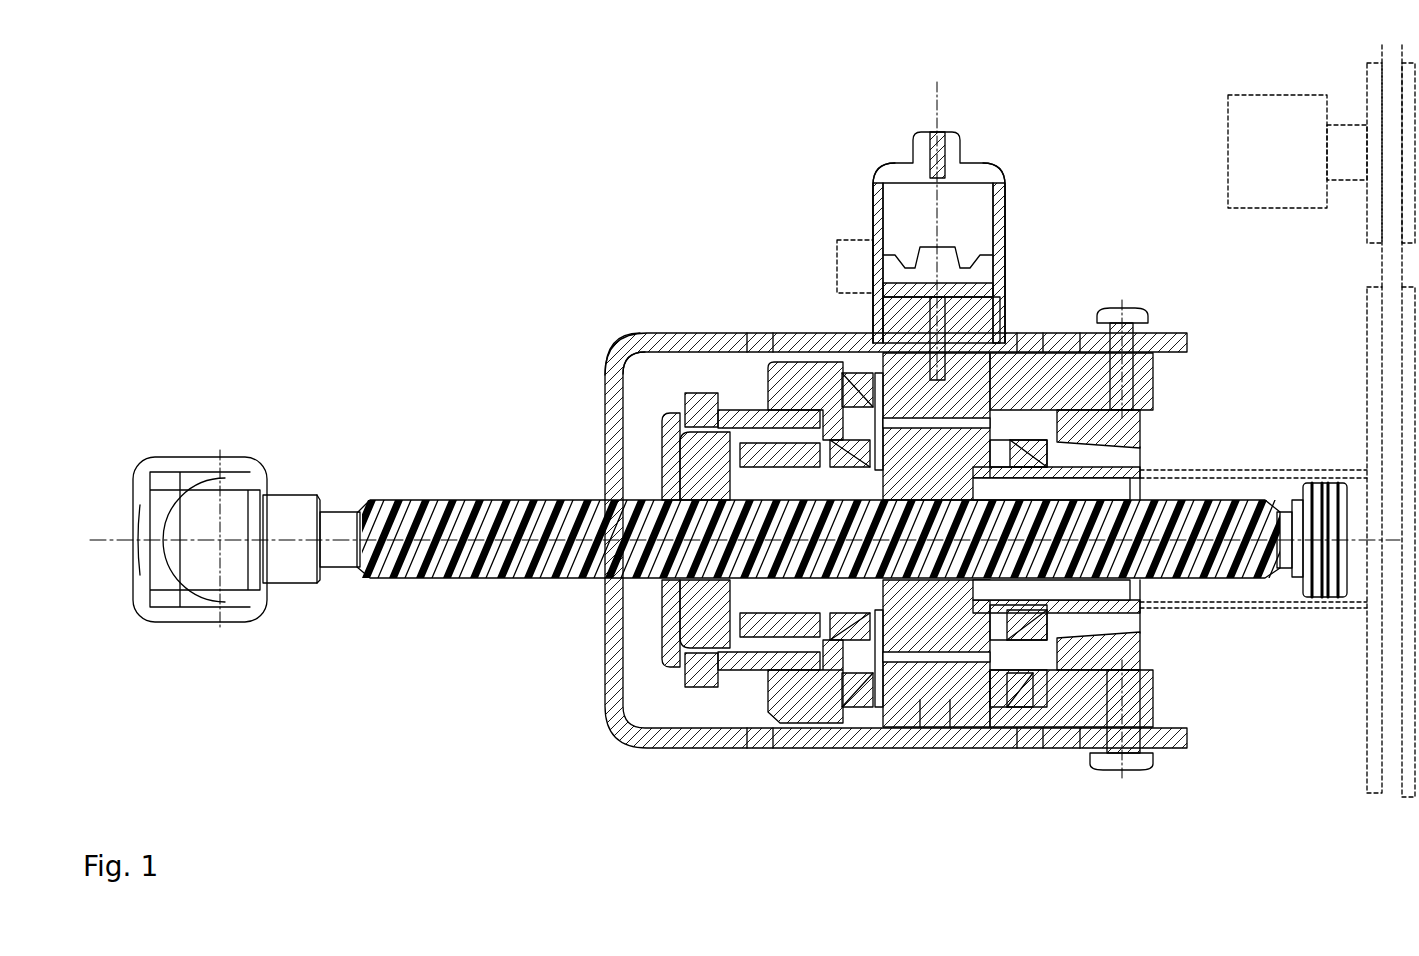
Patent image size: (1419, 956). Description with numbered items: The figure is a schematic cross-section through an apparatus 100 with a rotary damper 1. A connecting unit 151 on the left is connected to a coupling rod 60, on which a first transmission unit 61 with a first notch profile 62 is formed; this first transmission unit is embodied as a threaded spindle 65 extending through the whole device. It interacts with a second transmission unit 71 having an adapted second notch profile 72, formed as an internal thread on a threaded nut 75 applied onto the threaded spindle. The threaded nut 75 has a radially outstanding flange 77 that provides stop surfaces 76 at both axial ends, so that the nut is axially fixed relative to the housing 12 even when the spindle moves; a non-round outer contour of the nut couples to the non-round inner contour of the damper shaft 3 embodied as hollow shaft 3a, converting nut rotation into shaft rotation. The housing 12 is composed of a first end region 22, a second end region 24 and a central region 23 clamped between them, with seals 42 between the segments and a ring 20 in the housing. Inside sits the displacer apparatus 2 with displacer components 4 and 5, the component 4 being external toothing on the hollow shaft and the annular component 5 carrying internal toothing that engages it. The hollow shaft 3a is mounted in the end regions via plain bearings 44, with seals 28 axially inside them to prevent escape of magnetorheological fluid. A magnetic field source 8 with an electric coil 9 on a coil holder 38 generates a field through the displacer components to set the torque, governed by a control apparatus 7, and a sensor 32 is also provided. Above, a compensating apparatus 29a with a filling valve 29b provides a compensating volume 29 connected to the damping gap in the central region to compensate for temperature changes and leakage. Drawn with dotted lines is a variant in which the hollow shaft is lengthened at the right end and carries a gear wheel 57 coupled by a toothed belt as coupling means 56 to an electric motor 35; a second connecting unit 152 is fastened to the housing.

The apparatus 100 is at (522, 172).
The rotary damper 1 is at (1028, 245).
The displacer apparatus 2 is at (745, 320).
The damper shaft 3 is at (1150, 615).
The hollow shaft 3a is at (1150, 473).
The displacer component 4 is at (893, 710).
The displacer component 5 is at (960, 690).
The control apparatus 7 is at (857, 253).
The magnetic field source 8 is at (838, 430).
The electric coil 9 is at (840, 700).
The housing 12 is at (805, 700).
The ring 20 is at (880, 700).
The first end region 22 is at (765, 355).
The central region 23 is at (927, 745).
The second end region 24 is at (1060, 390).
The seal 28 is at (800, 330).
The compensating volume 29 is at (967, 203).
The compensating apparatus 29a is at (878, 160).
The filling valve 29b is at (937, 130).
The sensor 32 is at (705, 392).
The electric motor 35 is at (1250, 105).
The coil holder 38 is at (1040, 360).
The seal 42 is at (995, 700).
The bearing 44 is at (1150, 447).
The coupling means 56 is at (1385, 70).
The gear wheel 57 is at (1365, 786).
The coupling rod 60 is at (335, 495).
The first transmission unit 61 is at (433, 492).
The first notch profile 62 is at (513, 500).
The threaded spindle 65 is at (358, 585).
The second transmission unit 71 is at (690, 482).
The second notch profile 72 is at (660, 640).
The threaded nut 75 is at (735, 640).
The stop surface 76 is at (690, 455).
The flange 77 is at (700, 640).
The connecting unit 151 is at (245, 460).
The connecting unit 152 is at (1125, 315).